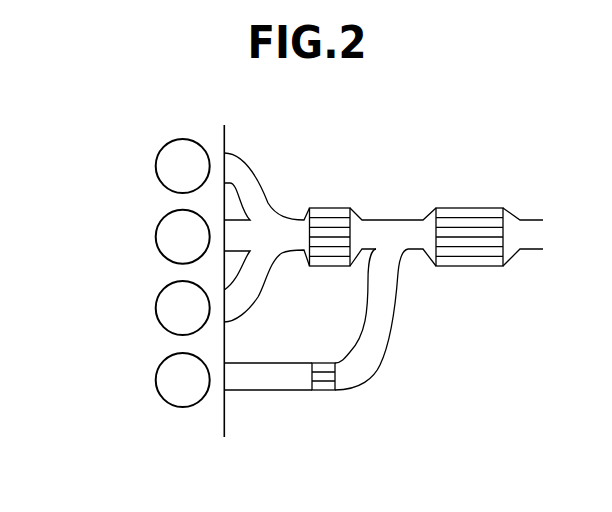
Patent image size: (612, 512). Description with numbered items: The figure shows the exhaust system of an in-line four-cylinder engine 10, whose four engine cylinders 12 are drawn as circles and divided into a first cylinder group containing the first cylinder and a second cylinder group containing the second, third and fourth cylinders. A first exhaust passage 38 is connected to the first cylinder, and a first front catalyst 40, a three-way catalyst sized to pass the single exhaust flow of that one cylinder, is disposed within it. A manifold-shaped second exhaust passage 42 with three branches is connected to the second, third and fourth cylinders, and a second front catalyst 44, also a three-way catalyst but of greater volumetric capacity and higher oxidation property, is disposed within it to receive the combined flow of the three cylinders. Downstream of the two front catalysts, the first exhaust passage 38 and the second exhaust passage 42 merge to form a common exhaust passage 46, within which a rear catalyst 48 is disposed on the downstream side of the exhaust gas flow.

The engine 10 is at (188, 422).
The engine cylinder 12 is at (155, 173).
The first exhaust passage 38 is at (253, 378).
The first front catalyst 40 is at (327, 388).
The second exhaust passage 42 is at (268, 223).
The second front catalyst 44 is at (330, 226).
The common exhaust passage 46 is at (403, 232).
The rear catalyst 48 is at (483, 215).